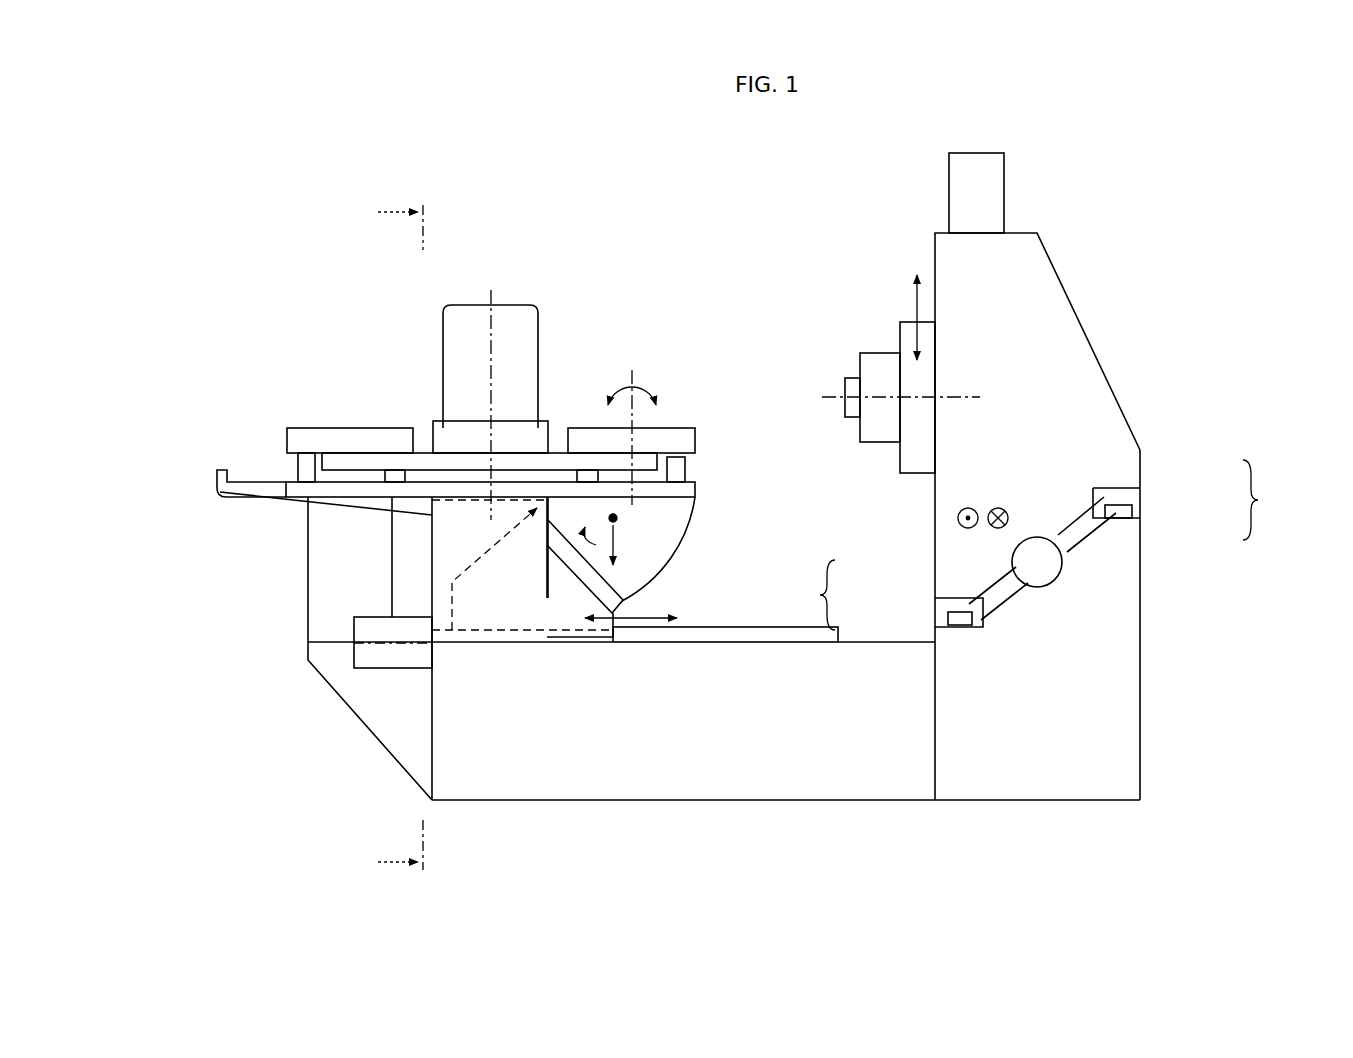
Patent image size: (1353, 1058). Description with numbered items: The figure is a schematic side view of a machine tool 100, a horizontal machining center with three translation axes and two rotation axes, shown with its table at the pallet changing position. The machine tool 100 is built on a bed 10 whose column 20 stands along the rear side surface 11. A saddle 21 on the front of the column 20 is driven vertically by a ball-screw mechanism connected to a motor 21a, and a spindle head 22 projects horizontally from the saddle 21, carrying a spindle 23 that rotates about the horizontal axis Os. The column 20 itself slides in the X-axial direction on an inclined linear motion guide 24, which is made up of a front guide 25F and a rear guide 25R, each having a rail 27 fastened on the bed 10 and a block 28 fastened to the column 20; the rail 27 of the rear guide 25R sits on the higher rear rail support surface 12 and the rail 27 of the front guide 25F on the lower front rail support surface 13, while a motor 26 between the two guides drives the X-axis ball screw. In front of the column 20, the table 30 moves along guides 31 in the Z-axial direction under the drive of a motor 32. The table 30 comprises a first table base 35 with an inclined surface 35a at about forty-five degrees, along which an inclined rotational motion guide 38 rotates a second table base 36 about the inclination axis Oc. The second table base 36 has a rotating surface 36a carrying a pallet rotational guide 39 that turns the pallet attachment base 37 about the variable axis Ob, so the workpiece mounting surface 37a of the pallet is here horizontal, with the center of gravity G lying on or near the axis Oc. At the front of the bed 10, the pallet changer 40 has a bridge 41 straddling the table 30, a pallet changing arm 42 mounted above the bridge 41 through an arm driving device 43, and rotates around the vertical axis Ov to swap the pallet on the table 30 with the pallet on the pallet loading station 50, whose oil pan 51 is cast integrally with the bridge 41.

The machine tool 100 is at (262, 153).
The bed 10 is at (752, 775).
The rear side surface 11 is at (1140, 710).
The rear rail support surface 12 is at (1108, 515).
The front rail support surface 13 is at (1015, 602).
The column 20 is at (1063, 345).
The saddle 21 is at (922, 380).
The motor 21a is at (982, 180).
The spindle head 22 is at (890, 435).
The spindle 23 is at (855, 405).
The inclined linear motion guide 24 is at (955, 535).
The front guide 25F is at (905, 595).
The rear guide 25R is at (1184, 506).
The motor 26 is at (1020, 555).
The rail 27 is at (950, 620).
The block 28 is at (955, 596).
The table 30 is at (708, 332).
The guides 31 is at (672, 650).
The motor 32 is at (362, 664).
The first table base 35 is at (572, 612).
The inclined surface 35a is at (605, 580).
The second table base 36 is at (647, 523).
The rotating surface 36a is at (647, 438).
The pallet attachment base 37 is at (673, 467).
The workpiece mounting surface 37a is at (673, 425).
The inclined rotational motion guide 38 is at (570, 570).
The pallet rotational guide 39 is at (673, 490).
The pallet changer 40 is at (542, 292).
The bridge 41 is at (398, 458).
The pallet changing arm 42 is at (443, 557).
The arm driving device 43 is at (458, 340).
The pallet loading station 50 is at (318, 552).
The oil pan 51 is at (235, 492).